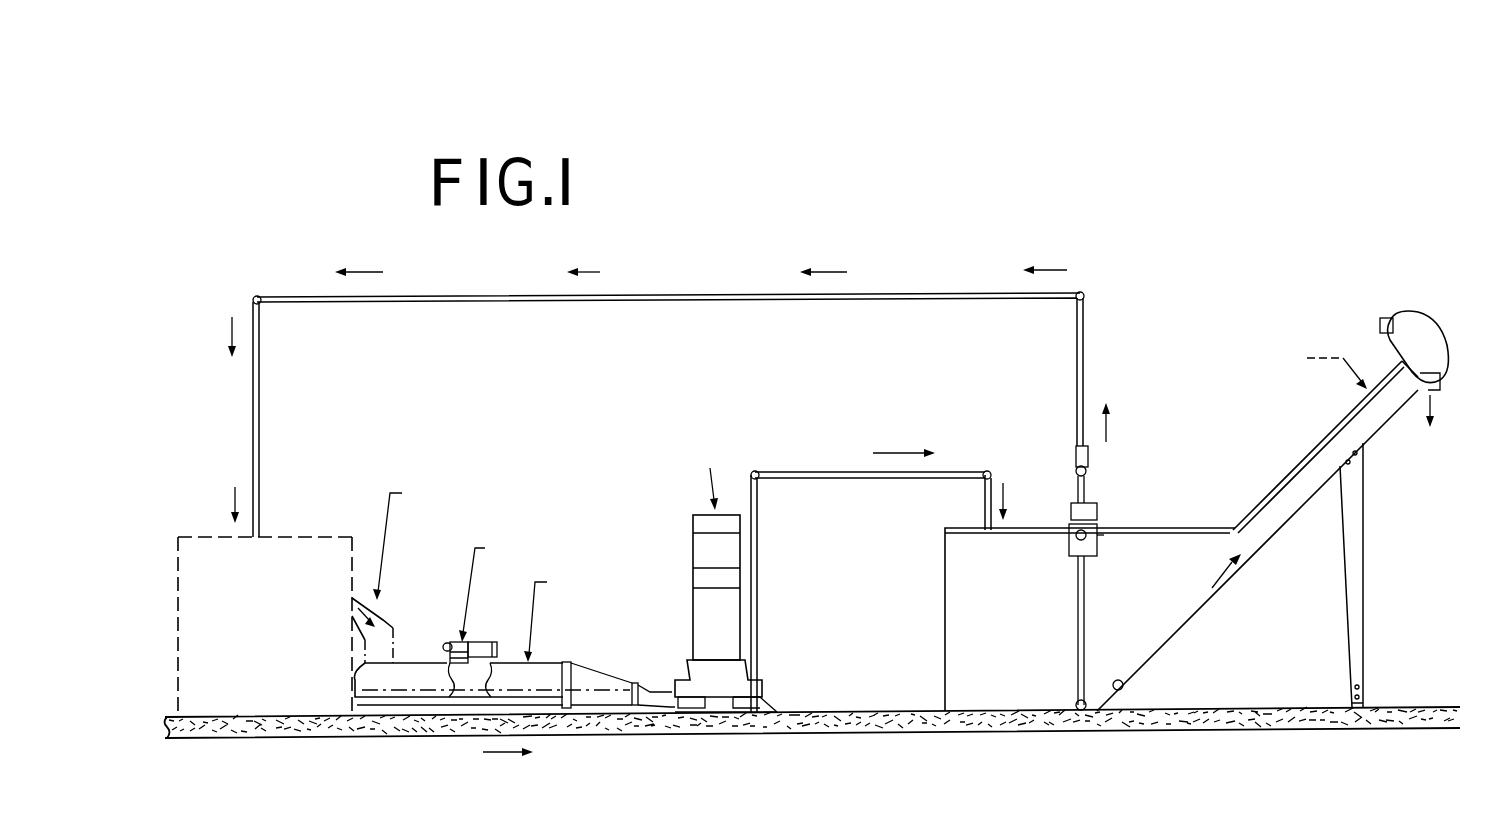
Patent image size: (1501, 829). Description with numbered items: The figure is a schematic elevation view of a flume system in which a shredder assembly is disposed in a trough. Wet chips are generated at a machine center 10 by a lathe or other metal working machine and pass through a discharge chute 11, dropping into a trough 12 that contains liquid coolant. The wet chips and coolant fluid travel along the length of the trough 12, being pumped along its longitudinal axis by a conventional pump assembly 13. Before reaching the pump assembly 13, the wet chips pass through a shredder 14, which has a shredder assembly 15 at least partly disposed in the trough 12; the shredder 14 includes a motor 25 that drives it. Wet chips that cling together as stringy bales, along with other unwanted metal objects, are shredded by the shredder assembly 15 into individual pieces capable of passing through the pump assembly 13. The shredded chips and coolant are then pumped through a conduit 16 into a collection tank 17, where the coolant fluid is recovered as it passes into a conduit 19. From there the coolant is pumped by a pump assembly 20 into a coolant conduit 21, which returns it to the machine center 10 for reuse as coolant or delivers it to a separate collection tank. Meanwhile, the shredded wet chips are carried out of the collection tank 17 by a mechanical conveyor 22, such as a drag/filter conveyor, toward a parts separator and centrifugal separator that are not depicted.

The machine center 10 is at (287, 680).
The discharge chute 11 is at (362, 592).
The trough 12 is at (560, 703).
The pump assembly 13 is at (710, 643).
The shredder 14 is at (447, 643).
The shredder assembly 15 is at (507, 690).
The conduit 16 is at (952, 470).
The collection tank 17 is at (992, 688).
The conduit 19 is at (1078, 583).
The pump assembly 20 is at (1099, 517).
The coolant conduit 21 is at (873, 293).
The mechanical conveyor 22 is at (1312, 452).
The motor 25 is at (477, 642).